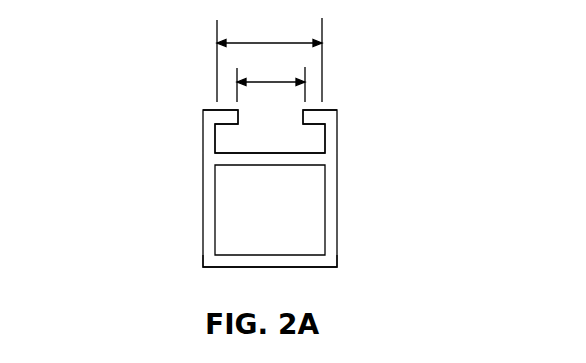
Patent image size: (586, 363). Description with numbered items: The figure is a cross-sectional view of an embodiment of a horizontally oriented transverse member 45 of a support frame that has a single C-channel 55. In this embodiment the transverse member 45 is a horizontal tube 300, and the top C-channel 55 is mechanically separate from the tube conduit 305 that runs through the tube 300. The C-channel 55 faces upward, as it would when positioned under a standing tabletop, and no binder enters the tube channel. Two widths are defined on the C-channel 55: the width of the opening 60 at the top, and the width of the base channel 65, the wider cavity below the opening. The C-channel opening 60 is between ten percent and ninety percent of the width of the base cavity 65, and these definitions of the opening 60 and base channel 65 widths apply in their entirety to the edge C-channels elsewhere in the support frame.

The horizontal tube 300 is at (195, 210).
The tube conduit 305 is at (295, 203).
The C-channel 55 is at (207, 133).
The transverse member 45 is at (205, 261).
The base channel 65 is at (282, 43).
The opening 60 is at (282, 82).